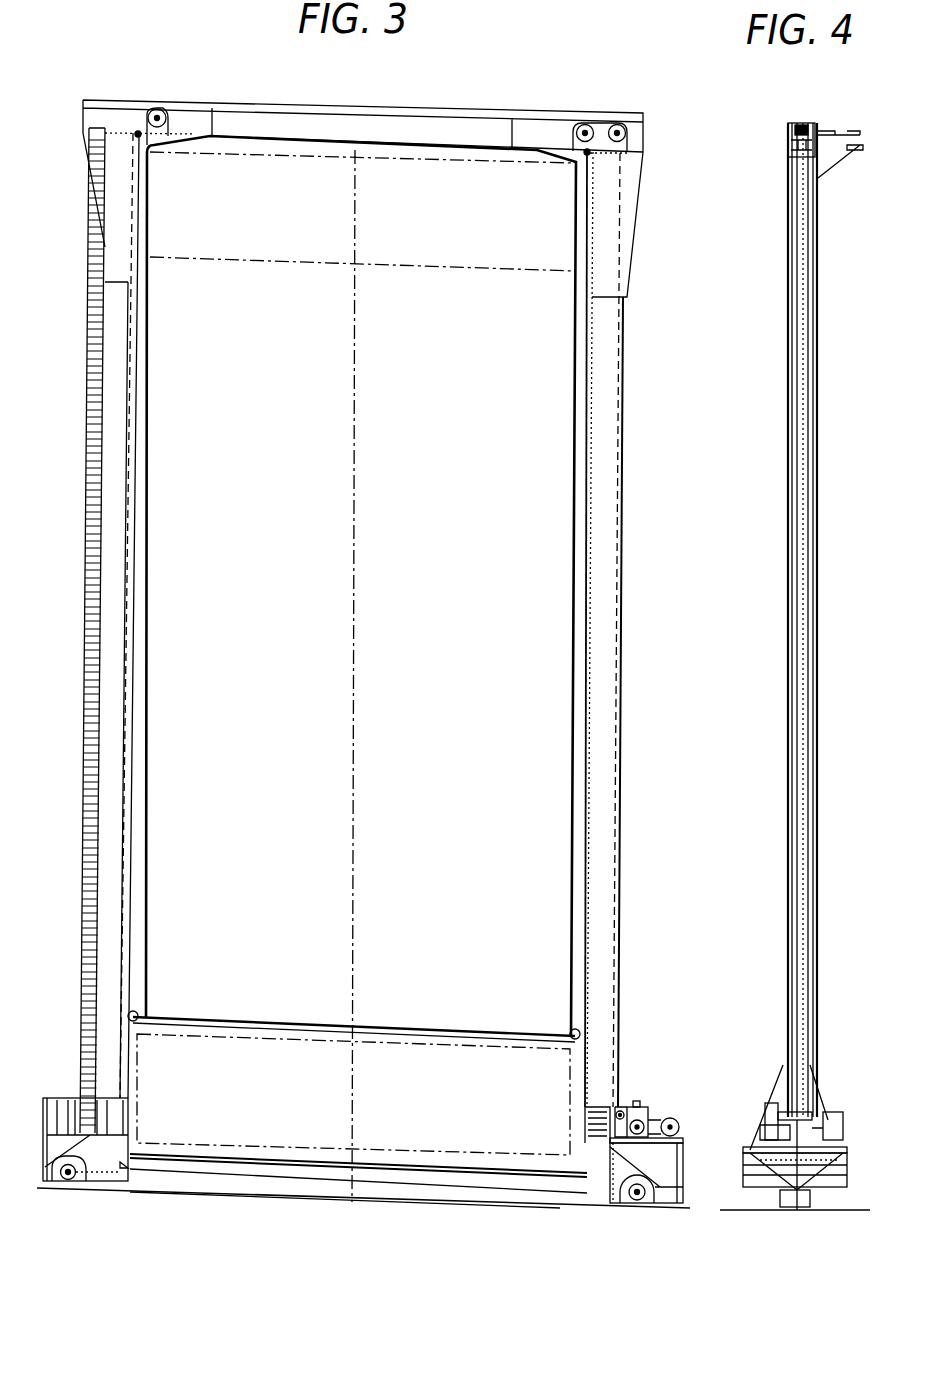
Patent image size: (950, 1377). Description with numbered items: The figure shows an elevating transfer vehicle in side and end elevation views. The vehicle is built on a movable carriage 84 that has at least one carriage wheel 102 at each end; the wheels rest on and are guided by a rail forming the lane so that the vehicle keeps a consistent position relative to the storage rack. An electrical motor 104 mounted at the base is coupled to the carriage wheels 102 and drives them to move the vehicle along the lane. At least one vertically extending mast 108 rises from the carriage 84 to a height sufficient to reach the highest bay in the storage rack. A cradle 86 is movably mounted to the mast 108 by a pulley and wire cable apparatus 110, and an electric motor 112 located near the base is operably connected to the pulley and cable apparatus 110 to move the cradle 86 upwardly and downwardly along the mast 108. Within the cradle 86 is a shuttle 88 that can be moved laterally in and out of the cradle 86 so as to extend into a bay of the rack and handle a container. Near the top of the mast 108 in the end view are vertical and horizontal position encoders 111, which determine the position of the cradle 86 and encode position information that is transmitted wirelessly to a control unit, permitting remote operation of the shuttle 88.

In FIG. 3, the carriage 84 is at (673, 1205).
In FIG. 4, the carriage 84 is at (747, 1165).
In FIG. 3, the cradle 86 is at (448, 1040).
In FIG. 4, the cradle 86 is at (817, 1094).
In FIG. 3, the shuttle 88 is at (262, 1152).
In FIG. 3, the carriage wheel 102 is at (68, 1190).
In FIG. 4, the carriage wheel 102 is at (797, 1212).
In FIG. 3, the electrical motor 104 is at (58, 1140).
In FIG. 4, the electrical motor 104 is at (845, 1180).
In FIG. 3, the mast 108 is at (148, 312).
In FIG. 4, the mast 108 is at (800, 122).
In FIG. 3, the pulley and wire cable apparatus 110 is at (638, 1103).
In FIG. 4, the pulley and wire cable apparatus 110 is at (790, 152).
In FIG. 4, the vertical and horizontal position encoders 111 is at (867, 146).
In FIG. 3, the electric motor 112 is at (672, 1120).